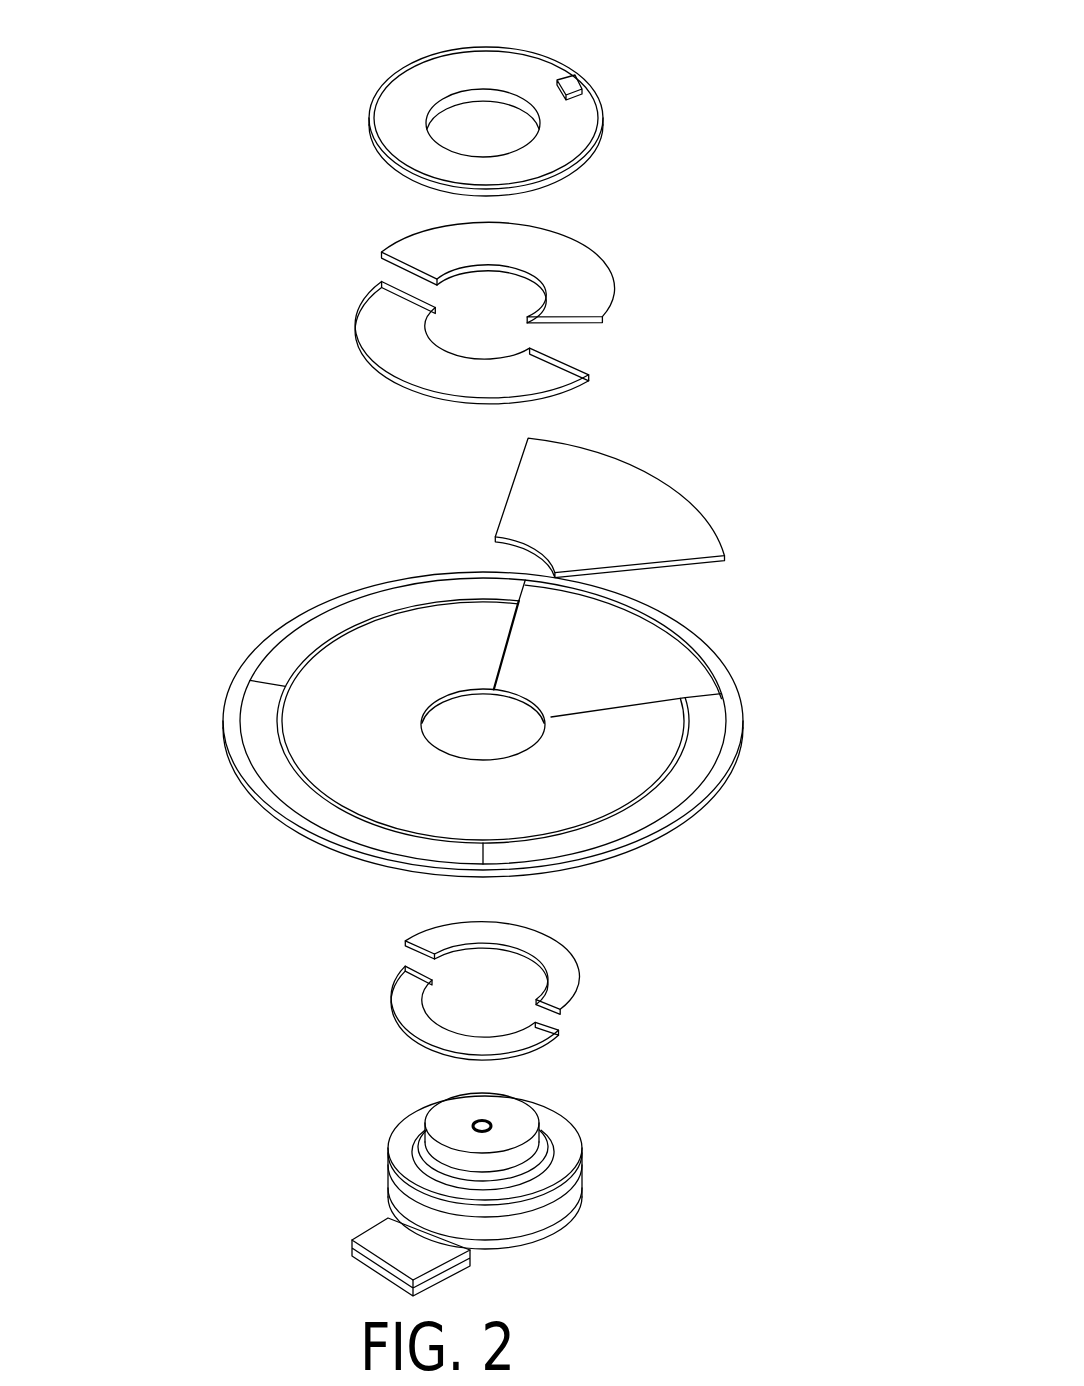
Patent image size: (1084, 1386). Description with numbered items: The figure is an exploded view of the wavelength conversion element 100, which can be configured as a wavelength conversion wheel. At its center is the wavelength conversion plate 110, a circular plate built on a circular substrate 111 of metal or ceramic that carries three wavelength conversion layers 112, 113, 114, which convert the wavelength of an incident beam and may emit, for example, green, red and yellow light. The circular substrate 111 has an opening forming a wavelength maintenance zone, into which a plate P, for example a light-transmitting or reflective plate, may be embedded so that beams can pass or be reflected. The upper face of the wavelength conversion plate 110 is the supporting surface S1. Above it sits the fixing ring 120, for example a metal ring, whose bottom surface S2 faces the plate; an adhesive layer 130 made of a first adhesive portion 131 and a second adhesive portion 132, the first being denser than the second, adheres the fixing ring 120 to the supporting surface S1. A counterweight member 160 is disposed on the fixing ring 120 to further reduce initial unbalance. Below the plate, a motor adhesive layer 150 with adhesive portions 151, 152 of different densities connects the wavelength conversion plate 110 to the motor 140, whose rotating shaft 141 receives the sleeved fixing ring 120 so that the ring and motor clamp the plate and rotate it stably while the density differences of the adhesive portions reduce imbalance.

The wavelength conversion element 100 is at (205, 33).
The wavelength conversion plate 110 is at (502, 699).
The circular substrate 111 is at (732, 746).
The wavelength conversion layer 112 is at (335, 618).
The wavelength conversion layer 113 is at (267, 757).
The wavelength conversion layer 114 is at (640, 817).
The fixing ring 120 is at (552, 142).
The adhesive layer 130 is at (572, 313).
The first adhesive portion 131 is at (607, 290).
The second adhesive portion 132 is at (553, 367).
The motor 140 is at (532, 1194).
The rotating shaft 141 is at (512, 1123).
The motor adhesive layer 150 is at (586, 995).
The adhesive portion 151 is at (572, 972).
The adhesive portion 152 is at (550, 1042).
The counterweight member 160 is at (583, 80).
The plate P is at (618, 482).
The supporting surface S1 is at (432, 637).
The bottom surface S2 is at (562, 179).